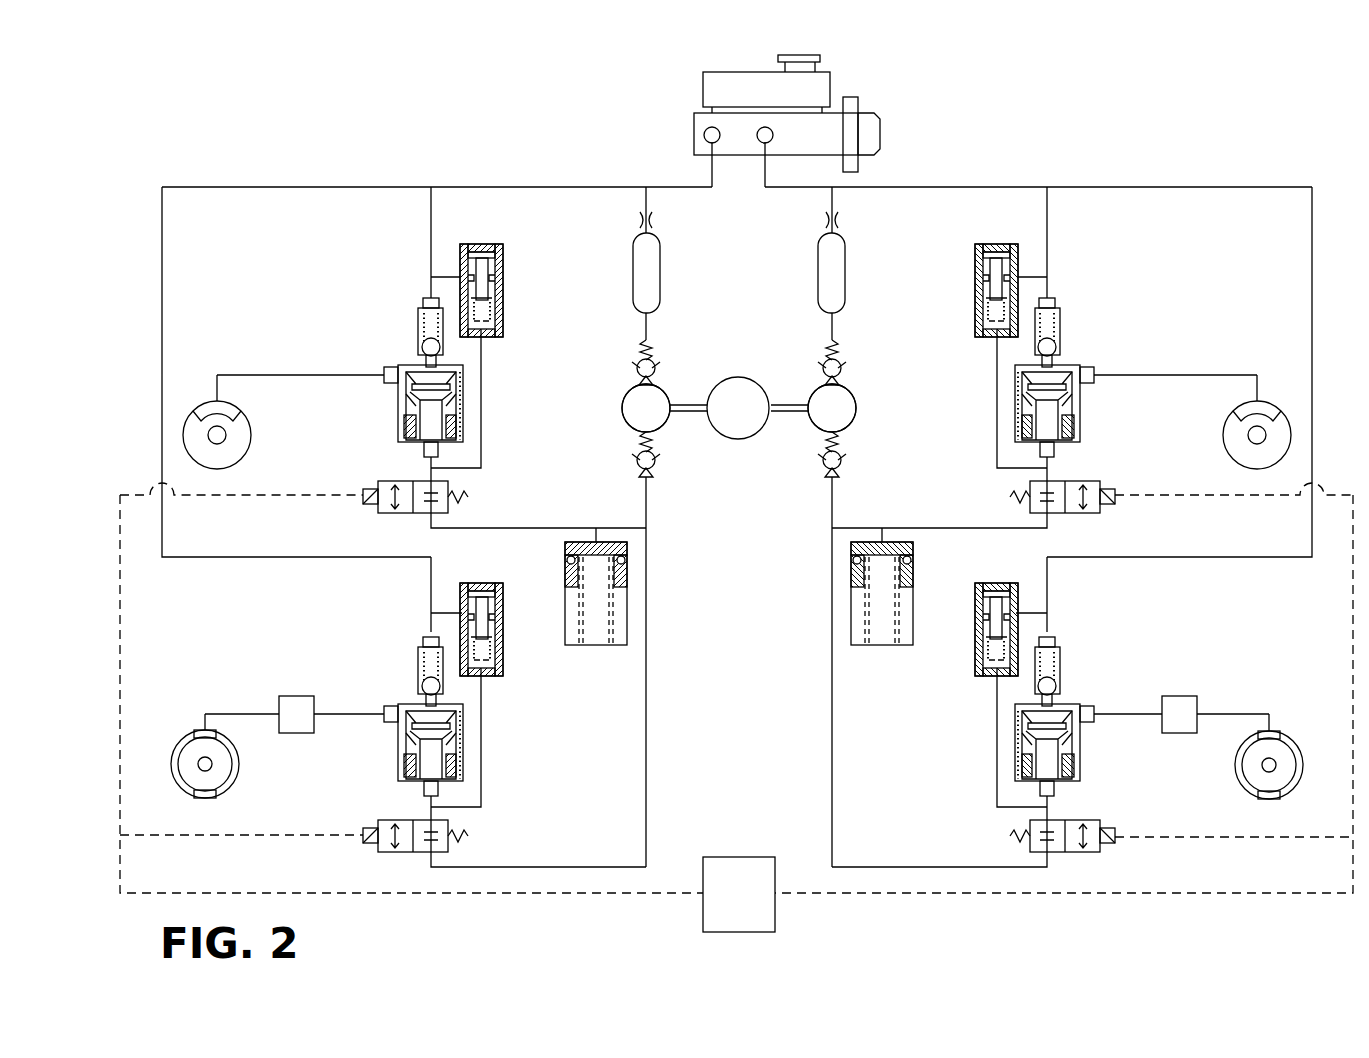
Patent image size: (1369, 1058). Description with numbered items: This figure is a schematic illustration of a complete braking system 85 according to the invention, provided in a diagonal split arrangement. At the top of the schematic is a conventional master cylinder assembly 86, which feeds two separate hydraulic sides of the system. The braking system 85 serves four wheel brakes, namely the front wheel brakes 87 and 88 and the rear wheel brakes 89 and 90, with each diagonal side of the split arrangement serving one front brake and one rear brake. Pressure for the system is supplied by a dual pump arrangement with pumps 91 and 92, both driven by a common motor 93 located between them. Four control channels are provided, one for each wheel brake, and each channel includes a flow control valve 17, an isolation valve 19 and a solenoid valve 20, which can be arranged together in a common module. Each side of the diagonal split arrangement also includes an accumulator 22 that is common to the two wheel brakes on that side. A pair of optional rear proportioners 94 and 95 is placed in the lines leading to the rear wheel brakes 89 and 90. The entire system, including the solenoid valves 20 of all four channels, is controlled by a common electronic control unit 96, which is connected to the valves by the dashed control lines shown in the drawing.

The flow control valve 17 is at (503, 264).
The isolation valve 19 is at (398, 399).
The solenoid valve 20 is at (385, 511).
The accumulator 22 is at (580, 540).
The braking system 85 is at (851, 113).
The master cylinder assembly 86 is at (855, 102).
The front wheel brake 87 is at (1265, 410).
The front wheel brake 88 is at (208, 410).
The rear wheel brake 89 is at (1277, 740).
The rear wheel brake 90 is at (196, 735).
The pump 91 is at (850, 392).
The pump 92 is at (632, 399).
The motor 93 is at (750, 378).
The rear proportioner 94 is at (1193, 696).
The rear proportioner 95 is at (303, 694).
The electronic control unit 96 is at (765, 857).